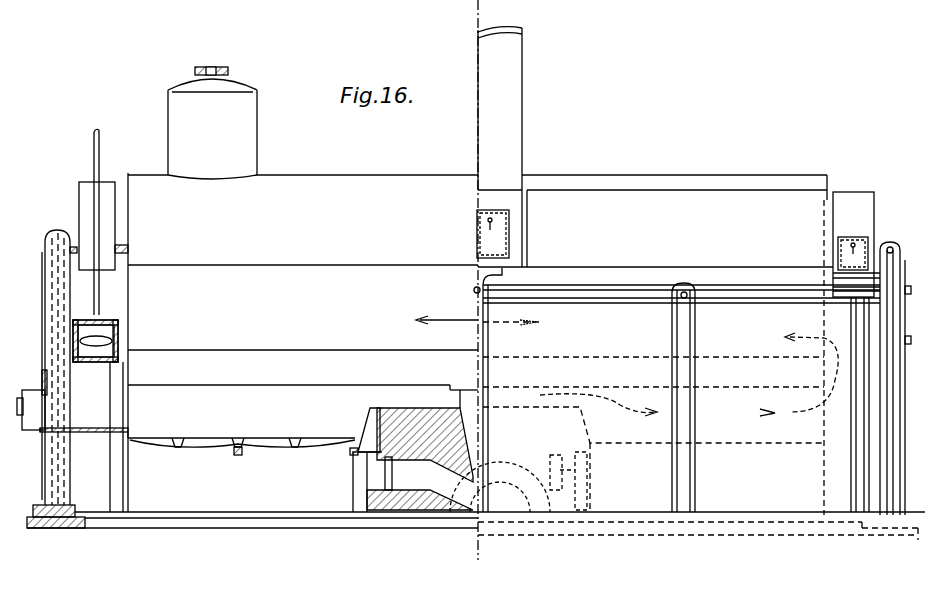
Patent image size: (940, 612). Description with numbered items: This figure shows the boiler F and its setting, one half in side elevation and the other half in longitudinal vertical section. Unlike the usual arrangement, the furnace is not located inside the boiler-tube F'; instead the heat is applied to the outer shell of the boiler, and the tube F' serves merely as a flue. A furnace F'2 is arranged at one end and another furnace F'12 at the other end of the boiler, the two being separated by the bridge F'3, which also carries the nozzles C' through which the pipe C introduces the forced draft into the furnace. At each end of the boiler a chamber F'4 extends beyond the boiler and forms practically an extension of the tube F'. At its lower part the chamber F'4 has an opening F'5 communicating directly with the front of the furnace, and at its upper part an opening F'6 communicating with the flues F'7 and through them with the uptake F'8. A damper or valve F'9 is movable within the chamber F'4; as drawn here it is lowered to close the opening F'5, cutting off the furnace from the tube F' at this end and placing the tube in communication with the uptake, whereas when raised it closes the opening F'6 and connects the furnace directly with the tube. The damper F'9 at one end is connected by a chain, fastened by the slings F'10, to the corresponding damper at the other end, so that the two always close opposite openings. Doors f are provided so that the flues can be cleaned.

The boiler F is at (477, 342).
The boiler-tube F' is at (303, 348).
The furnace F'2 is at (247, 427).
The bridge F'3 is at (413, 451).
The chamber F'4 is at (70, 367).
The opening F'5 is at (72, 401).
The opening F'6 is at (109, 279).
The flues F'7 is at (479, 345).
The uptake F'8 is at (500, 147).
The damper or valve F'9 is at (114, 415).
The slings F'10 is at (79, 222).
The furnace F'12 is at (660, 416).
The doors f is at (672, 240).
The pipe C is at (518, 504).
The nozzles C' is at (382, 445).